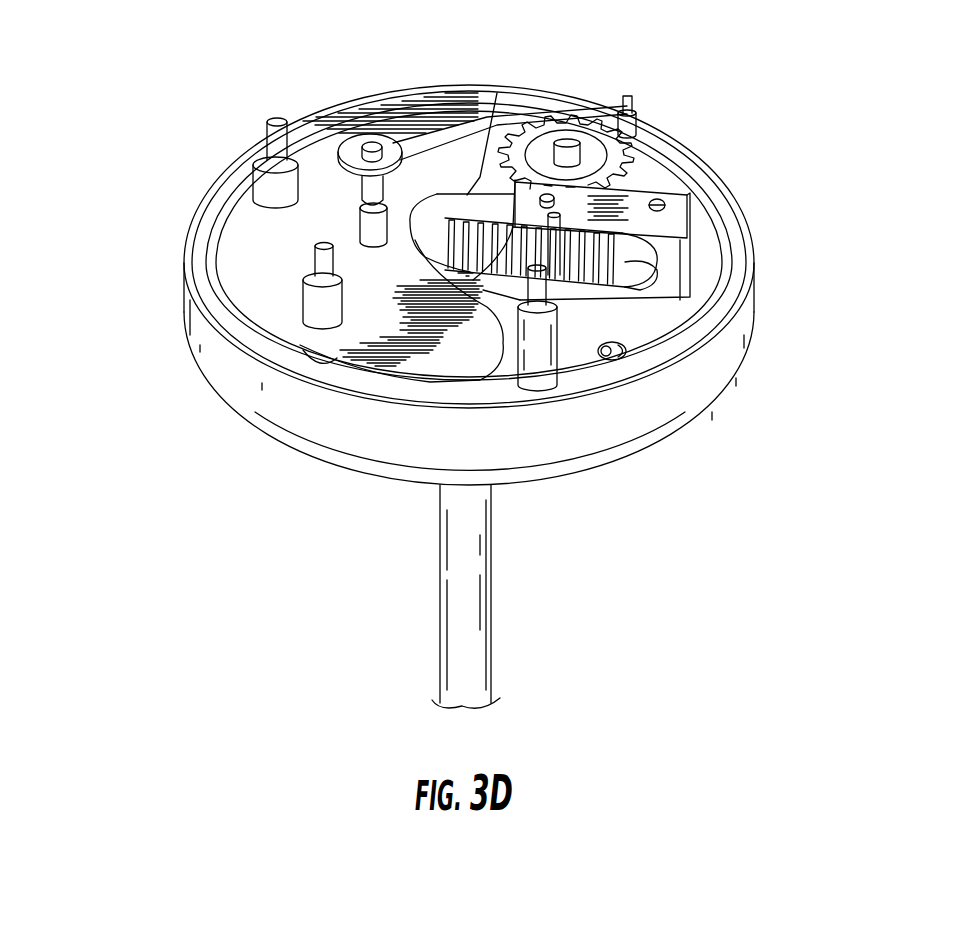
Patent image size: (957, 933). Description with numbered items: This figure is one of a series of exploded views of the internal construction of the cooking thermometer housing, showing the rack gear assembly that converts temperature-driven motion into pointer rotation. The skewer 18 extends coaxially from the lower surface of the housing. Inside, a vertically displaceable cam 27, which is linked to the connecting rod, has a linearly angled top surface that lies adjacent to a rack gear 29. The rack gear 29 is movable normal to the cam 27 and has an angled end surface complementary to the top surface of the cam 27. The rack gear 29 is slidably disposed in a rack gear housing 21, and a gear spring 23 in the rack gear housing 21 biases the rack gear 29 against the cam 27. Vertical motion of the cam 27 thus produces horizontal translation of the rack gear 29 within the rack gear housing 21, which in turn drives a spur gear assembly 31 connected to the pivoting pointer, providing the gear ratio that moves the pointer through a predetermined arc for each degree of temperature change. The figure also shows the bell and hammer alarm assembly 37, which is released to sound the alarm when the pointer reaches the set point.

The skewer 18 is at (491, 598).
The rack gear housing 21 is at (670, 196).
The gear spring 23 is at (657, 248).
The cam 27 is at (410, 211).
The rack gear 29 is at (630, 282).
The spur gear assembly 31 is at (556, 262).
The bell and hammer alarm assembly 37 is at (427, 133).